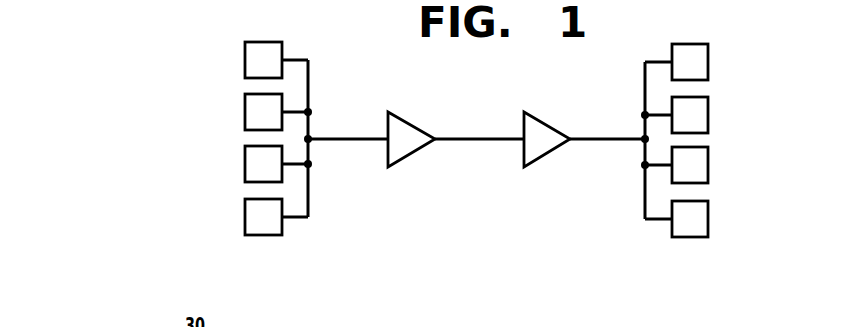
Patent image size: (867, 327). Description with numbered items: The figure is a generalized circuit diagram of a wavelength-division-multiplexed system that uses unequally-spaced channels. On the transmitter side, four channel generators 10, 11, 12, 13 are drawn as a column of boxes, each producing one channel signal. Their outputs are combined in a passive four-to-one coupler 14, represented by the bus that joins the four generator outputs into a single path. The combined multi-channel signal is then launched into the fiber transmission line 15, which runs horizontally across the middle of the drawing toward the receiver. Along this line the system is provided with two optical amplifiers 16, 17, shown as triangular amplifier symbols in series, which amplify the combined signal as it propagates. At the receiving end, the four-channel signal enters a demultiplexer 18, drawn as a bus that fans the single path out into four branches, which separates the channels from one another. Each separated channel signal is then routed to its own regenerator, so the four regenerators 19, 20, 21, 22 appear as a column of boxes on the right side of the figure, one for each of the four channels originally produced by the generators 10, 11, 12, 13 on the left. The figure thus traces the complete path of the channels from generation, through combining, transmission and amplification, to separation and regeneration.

The channel generator 10 is at (245, 59).
The channel generator 11 is at (245, 111).
The channel generator 12 is at (245, 163).
The channel generator 13 is at (245, 217).
The passive 4:1 coupler 14 is at (311, 66).
The fiber transmission line 15 is at (341, 146).
The optical amplifier 16 is at (400, 158).
The optical amplifier 17 is at (535, 158).
The demultiplexer 18 is at (644, 63).
The regenerator 19 is at (709, 63).
The regenerator 20 is at (709, 116).
The regenerator 21 is at (709, 166).
The regenerator 22 is at (709, 220).